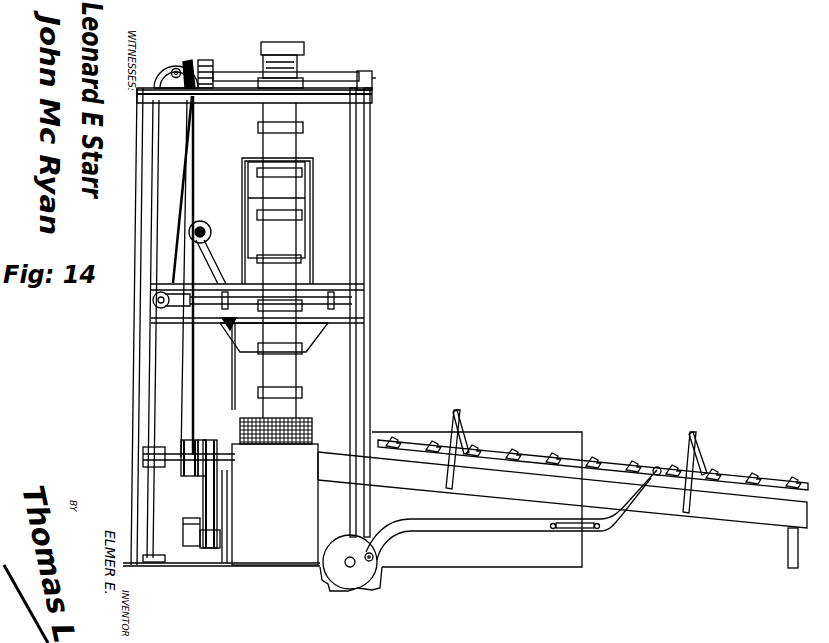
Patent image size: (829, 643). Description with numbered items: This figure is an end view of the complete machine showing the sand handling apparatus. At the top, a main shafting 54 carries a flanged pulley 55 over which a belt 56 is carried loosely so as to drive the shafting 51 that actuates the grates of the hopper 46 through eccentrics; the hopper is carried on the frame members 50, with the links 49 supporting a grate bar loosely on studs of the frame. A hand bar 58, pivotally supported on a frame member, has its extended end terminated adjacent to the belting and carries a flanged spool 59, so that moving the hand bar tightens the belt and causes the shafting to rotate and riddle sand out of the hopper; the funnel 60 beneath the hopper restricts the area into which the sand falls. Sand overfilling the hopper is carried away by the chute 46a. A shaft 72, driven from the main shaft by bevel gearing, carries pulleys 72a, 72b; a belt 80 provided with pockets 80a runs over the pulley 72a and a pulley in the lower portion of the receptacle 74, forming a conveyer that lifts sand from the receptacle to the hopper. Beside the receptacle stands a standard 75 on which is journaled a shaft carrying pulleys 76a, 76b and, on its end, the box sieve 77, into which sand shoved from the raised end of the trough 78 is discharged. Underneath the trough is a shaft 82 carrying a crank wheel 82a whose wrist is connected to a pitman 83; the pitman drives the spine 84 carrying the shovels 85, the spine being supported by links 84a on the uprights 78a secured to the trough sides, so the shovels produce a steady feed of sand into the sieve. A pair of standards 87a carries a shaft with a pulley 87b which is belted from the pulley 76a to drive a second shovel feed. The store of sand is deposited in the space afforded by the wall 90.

The hopper 46 is at (314, 282).
The chute 46a is at (310, 236).
The links 49 is at (355, 304).
The frame members 50 is at (360, 290).
The shafting 51 is at (156, 303).
The main shafting 54 is at (176, 72).
The flanged pulley 55 is at (190, 60).
The belt 56 is at (158, 134).
The hand bar 58 is at (232, 404).
The flanged spool 59 is at (203, 222).
The funnel 60 is at (318, 338).
The shaft 72 is at (346, 76).
The pulley 72a is at (306, 62).
The pulley 72b is at (212, 68).
The receptacle 74 is at (275, 504).
The standard 75 is at (150, 500).
The pulley 76a is at (200, 478).
The pulley 76b is at (180, 448).
The box sieve 77 is at (305, 422).
The trough 78 is at (562, 510).
The uprights 78a is at (447, 420).
The belt 80 is at (300, 150).
The pockets 80a is at (270, 212).
The shaft 82 is at (345, 563).
The crank wheel 82a is at (358, 580).
The pitman 83 is at (478, 530).
The spine 84 is at (617, 468).
The links 84a is at (703, 450).
The shovels 85 is at (712, 494).
The standards 87a is at (190, 540).
The pulley 87b is at (216, 552).
The wall 90 is at (500, 430).